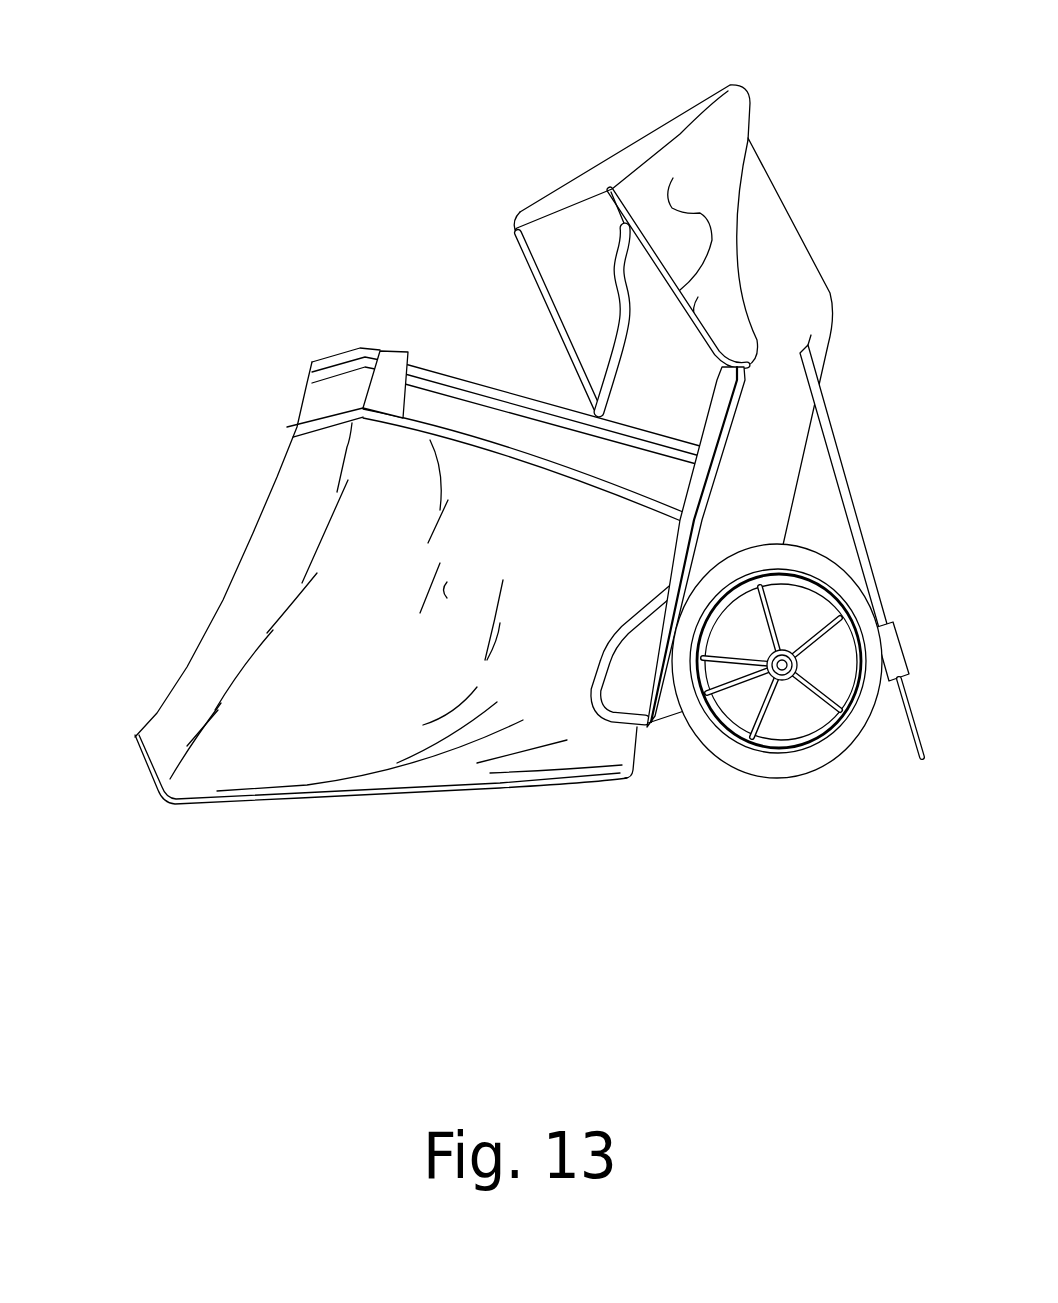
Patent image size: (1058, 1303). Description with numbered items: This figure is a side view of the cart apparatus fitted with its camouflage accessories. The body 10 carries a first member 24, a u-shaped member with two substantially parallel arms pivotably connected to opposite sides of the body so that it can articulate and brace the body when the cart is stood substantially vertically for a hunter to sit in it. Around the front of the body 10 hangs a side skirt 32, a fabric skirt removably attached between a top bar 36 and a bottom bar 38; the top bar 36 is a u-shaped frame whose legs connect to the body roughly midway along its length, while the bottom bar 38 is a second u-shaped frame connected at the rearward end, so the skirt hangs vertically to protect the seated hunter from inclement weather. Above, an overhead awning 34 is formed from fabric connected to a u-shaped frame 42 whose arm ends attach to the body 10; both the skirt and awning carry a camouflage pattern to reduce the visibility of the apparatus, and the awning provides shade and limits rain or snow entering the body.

The body 10 is at (862, 153).
The first member 24 is at (840, 451).
The side skirt 32 is at (428, 770).
The overhead awning 34 is at (648, 139).
The top bar 36 is at (403, 355).
The bottom bar 38 is at (153, 785).
The u-shaped frame 42 is at (534, 209).